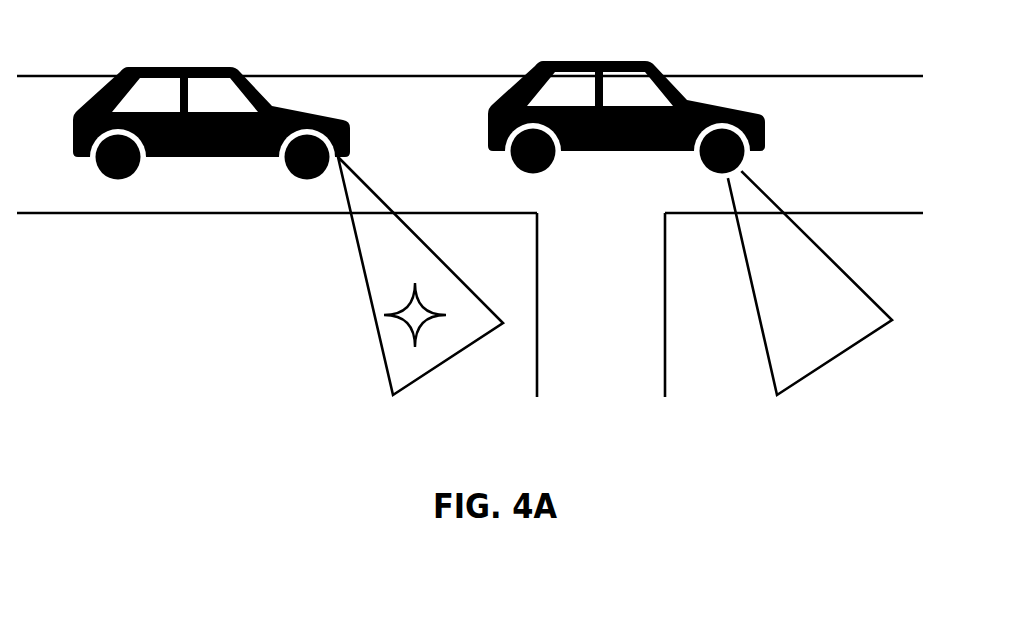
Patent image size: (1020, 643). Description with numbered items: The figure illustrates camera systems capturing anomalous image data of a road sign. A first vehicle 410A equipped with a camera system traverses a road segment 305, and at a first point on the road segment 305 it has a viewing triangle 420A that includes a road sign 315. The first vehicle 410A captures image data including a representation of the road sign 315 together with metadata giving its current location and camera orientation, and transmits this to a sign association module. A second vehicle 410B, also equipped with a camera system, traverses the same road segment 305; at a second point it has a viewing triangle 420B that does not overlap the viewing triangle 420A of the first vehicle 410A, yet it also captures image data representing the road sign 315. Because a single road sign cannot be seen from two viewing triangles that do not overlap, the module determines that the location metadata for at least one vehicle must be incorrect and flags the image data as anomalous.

The road segment 305 is at (459, 74).
The first vehicle 410A is at (350, 142).
The second vehicle 410B is at (767, 137).
The road sign 315 is at (446, 315).
The viewing triangle 420A is at (505, 323).
The viewing triangle 420B is at (775, 353).